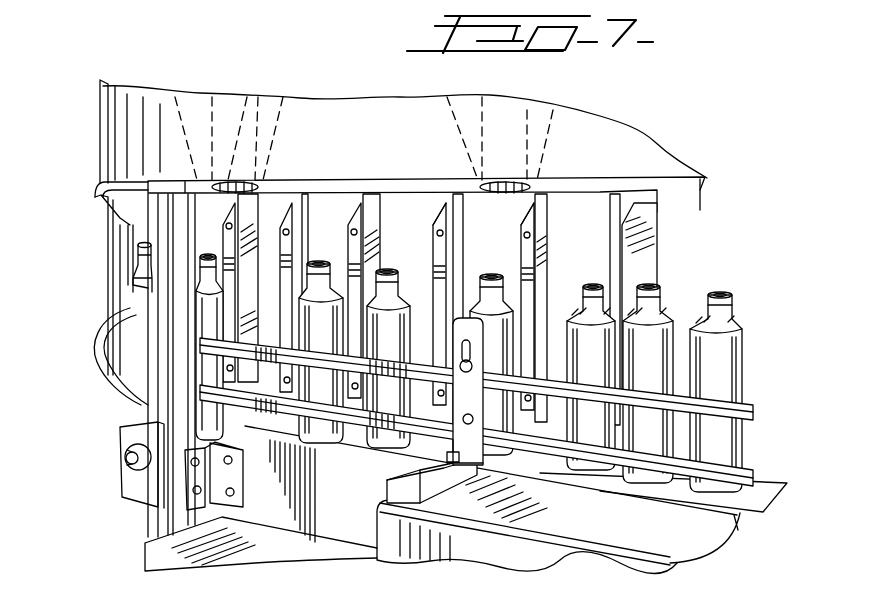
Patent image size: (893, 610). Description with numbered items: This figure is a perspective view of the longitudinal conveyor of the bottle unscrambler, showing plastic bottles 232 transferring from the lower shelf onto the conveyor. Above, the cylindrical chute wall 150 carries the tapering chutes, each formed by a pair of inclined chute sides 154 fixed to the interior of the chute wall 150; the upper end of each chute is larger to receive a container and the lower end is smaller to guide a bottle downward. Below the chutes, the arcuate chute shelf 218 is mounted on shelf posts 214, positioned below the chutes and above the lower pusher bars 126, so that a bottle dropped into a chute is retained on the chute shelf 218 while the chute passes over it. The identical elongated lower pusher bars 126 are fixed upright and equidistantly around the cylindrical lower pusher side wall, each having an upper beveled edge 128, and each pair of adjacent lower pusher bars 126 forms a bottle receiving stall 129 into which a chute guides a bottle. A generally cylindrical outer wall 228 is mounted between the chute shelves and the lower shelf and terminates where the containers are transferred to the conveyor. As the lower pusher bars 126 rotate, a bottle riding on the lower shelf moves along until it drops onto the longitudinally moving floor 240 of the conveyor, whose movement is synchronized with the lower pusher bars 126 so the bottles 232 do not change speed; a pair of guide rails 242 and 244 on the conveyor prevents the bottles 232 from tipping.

The cylindrical chute wall 150 is at (118, 140).
The inclined chute sides 154 is at (193, 87).
The lower pusher bars 126 is at (297, 228).
The bottle receiving stall 129 is at (337, 232).
The upper beveled edge 128 is at (443, 212).
The chute shelf 218 is at (400, 190).
The outer wall 228 is at (116, 236).
The shelf posts 214 is at (160, 293).
The plastic bottles 232 is at (717, 287).
The guide rail 242 is at (200, 343).
The guide rail 244 is at (203, 388).
The longitudinally moving floor 240 is at (353, 427).